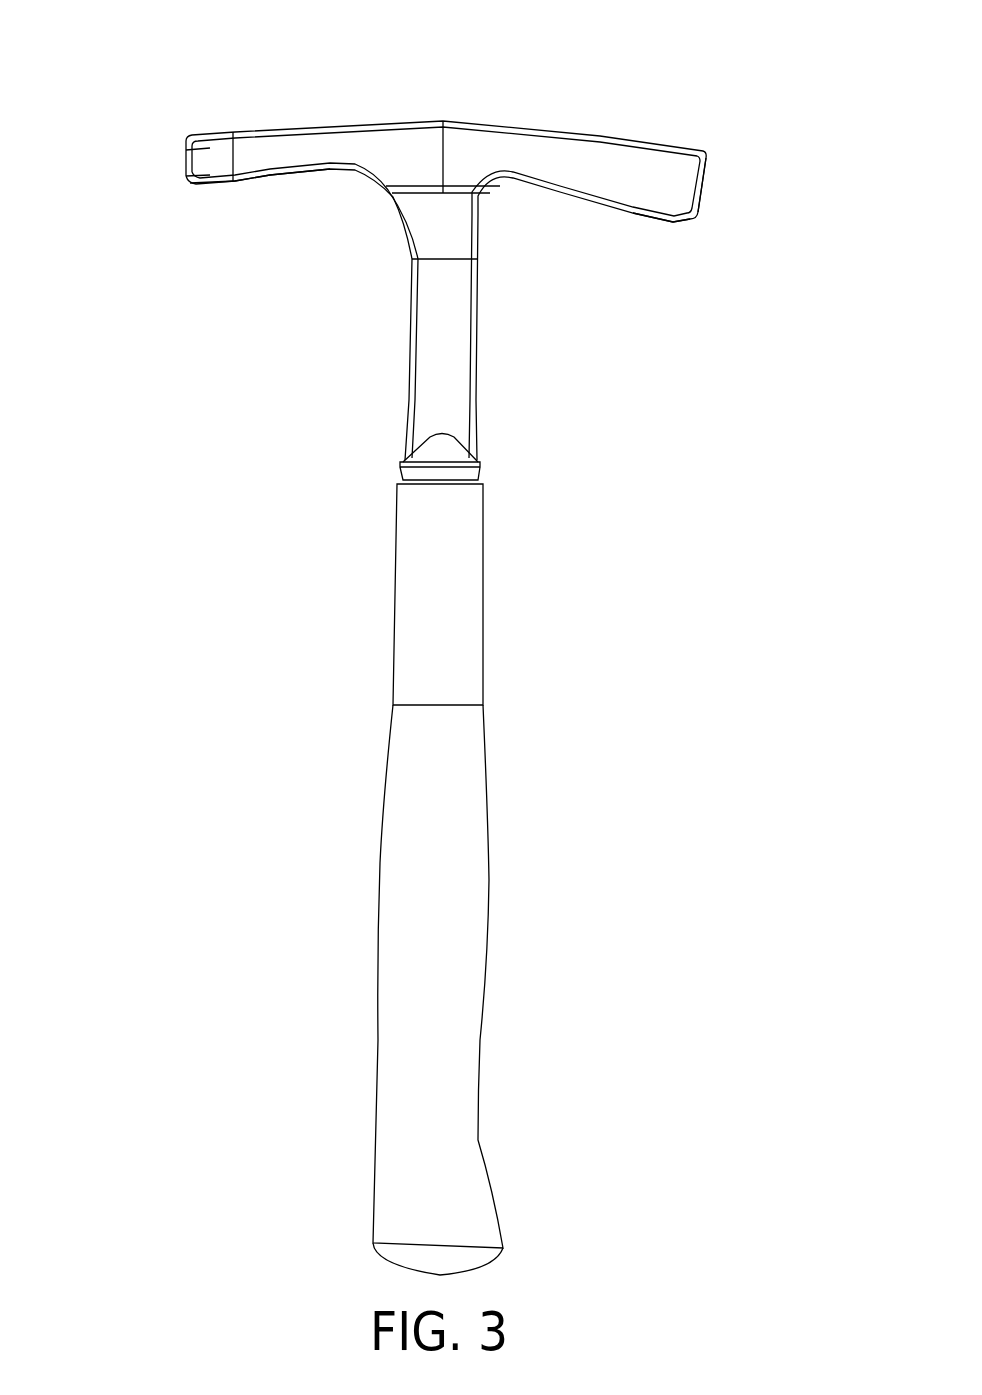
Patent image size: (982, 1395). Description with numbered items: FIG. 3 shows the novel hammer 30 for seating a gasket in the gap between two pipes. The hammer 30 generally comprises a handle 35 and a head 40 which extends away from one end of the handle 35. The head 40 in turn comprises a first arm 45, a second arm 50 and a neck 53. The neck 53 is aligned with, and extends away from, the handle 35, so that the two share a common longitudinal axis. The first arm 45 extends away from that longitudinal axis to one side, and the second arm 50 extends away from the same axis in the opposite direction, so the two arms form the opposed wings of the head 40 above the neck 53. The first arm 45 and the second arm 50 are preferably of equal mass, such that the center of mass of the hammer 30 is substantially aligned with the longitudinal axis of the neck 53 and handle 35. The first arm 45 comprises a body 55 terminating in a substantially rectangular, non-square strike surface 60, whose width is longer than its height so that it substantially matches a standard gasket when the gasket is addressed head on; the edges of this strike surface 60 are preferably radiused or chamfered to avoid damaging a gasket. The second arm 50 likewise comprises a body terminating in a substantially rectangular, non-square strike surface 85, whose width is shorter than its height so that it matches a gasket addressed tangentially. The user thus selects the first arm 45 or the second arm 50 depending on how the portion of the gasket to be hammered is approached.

The hammer 30 is at (120, 78).
The handle 35 is at (519, 858).
The head 40 is at (428, 84).
The first arm 45 is at (178, 217).
The second arm 50 is at (686, 249).
The neck 53 is at (501, 315).
The body 55 is at (266, 204).
The substantially rectangular, non-square strike surface 60 is at (166, 163).
The substantially rectangular, non-square strike surface 85 is at (718, 187).